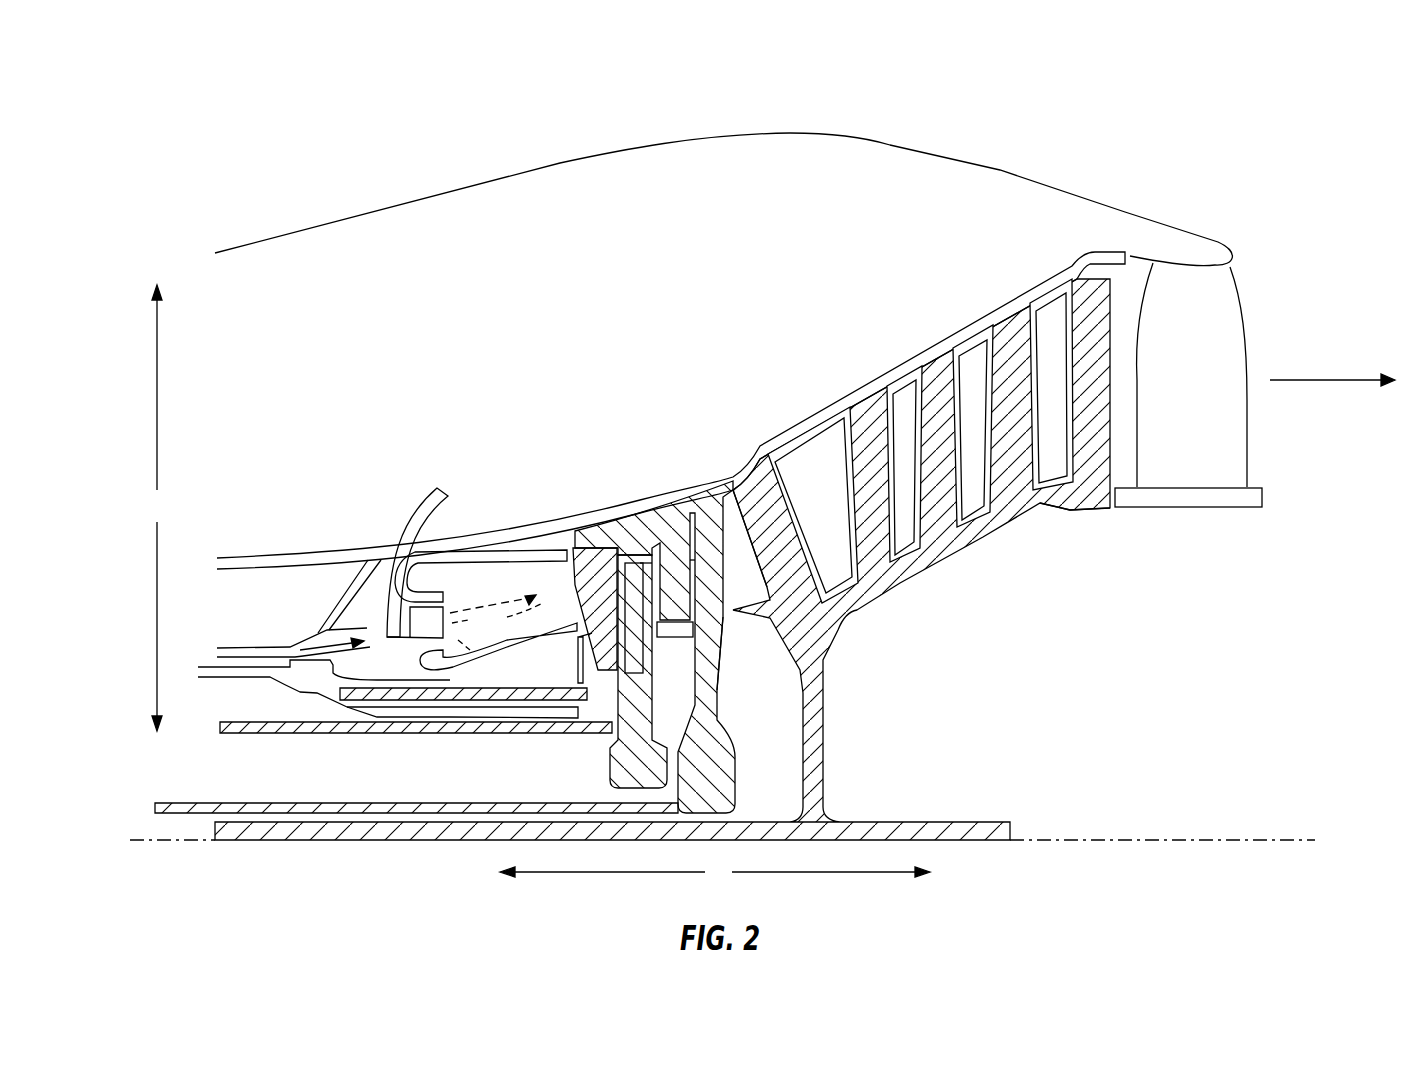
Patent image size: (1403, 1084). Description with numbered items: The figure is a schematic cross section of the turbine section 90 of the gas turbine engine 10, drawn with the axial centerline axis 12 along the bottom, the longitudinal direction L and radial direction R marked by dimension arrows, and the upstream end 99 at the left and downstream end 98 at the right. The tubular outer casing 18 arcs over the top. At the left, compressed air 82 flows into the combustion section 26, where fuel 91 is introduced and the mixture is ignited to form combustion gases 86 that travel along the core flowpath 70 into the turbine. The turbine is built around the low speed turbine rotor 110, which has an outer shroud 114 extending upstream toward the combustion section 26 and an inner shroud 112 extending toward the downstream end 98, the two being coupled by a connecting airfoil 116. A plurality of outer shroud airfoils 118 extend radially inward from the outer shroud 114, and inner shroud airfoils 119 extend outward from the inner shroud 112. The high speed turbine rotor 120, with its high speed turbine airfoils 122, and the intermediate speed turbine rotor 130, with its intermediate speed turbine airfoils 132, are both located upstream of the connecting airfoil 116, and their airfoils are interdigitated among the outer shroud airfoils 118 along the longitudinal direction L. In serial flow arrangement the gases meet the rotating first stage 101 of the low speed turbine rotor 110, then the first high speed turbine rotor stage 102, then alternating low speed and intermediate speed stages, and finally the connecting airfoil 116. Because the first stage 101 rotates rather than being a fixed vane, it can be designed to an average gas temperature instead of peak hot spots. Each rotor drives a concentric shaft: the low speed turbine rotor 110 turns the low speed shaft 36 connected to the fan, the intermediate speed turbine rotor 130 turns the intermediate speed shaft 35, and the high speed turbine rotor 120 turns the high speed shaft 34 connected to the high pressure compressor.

The gas turbine engine 10 is at (1025, 88).
The axial centerline axis 12 is at (1200, 830).
The outer casing 18 is at (635, 170).
The combustion section 26 is at (478, 498).
The high speed shaft 34 is at (575, 727).
The intermediate speed shaft 35 is at (215, 803).
The low speed shaft 36 is at (1010, 822).
The core flowpath 70 is at (800, 465).
The compressed air 82 is at (317, 650).
The combustion gases 86 is at (1310, 380).
The turbine section 90 is at (804, 326).
The fuel 91 is at (450, 610).
The downstream end 98 is at (1340, 606).
The upstream end 99 is at (140, 598).
The first stage 101 is at (550, 557).
The first high speed turbine rotor stage 102 is at (640, 563).
The low speed turbine rotor 110 is at (865, 598).
The inner shroud 112 is at (1003, 512).
The outer shroud 114 is at (596, 532).
The connecting airfoil 116 is at (760, 515).
The outer shroud airfoils 118 is at (662, 560).
The inner shroud airfoils 119 is at (870, 400).
The high speed turbine rotor 120 is at (640, 720).
The high speed turbine airfoils 122 is at (630, 560).
The intermediate speed turbine rotor 130 is at (757, 592).
The intermediate speed turbine airfoils 132 is at (695, 560).
The radial direction R is at (159, 508).
The longitudinal direction L is at (715, 873).